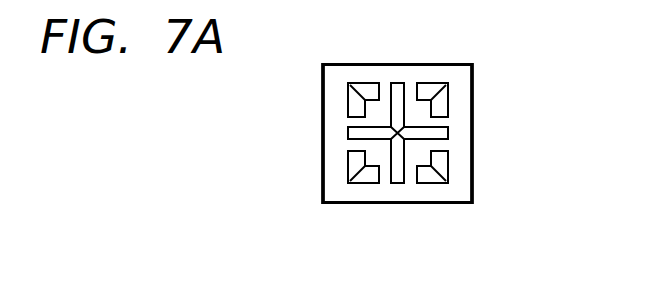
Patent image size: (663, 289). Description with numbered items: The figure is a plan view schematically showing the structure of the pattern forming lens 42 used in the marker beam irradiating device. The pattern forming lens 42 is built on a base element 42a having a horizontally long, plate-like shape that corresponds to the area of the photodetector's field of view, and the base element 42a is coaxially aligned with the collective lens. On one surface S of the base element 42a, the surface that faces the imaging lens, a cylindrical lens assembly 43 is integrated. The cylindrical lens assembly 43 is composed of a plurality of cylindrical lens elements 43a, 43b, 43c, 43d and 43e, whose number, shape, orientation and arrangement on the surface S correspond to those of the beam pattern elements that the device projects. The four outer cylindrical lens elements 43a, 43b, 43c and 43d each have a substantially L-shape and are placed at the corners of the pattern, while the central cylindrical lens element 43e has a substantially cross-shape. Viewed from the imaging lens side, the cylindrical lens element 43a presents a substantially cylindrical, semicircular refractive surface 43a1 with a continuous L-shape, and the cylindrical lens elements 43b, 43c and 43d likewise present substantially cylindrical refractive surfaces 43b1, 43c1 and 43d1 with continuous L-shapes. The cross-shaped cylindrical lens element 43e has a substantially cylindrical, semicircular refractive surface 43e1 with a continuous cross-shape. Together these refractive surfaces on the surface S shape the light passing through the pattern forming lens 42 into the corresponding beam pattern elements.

The pattern forming lens 42 is at (474, 97).
The base element 42a is at (332, 183).
The surface of the base element S is at (462, 73).
The cylindrical lens assembly 43 is at (399, 144).
The cylindrical lens element 43a is at (354, 104).
The refractive surface 43a1 is at (372, 92).
The cylindrical lens element 43b is at (445, 96).
The refractive surface 43b1 is at (429, 92).
The cylindrical lens element 43c is at (447, 176).
The refractive surface 43c1 is at (442, 164).
The cylindrical lens element 43d is at (357, 180).
The refractive surface 43d1 is at (370, 175).
The cylindrical lens element 43e is at (446, 131).
The refractive surface 43e1 is at (355, 132).